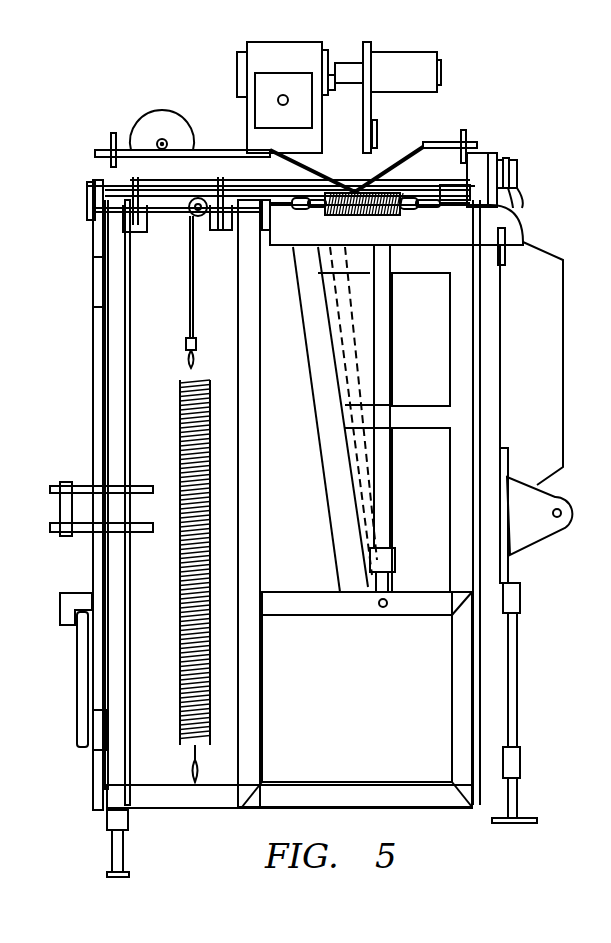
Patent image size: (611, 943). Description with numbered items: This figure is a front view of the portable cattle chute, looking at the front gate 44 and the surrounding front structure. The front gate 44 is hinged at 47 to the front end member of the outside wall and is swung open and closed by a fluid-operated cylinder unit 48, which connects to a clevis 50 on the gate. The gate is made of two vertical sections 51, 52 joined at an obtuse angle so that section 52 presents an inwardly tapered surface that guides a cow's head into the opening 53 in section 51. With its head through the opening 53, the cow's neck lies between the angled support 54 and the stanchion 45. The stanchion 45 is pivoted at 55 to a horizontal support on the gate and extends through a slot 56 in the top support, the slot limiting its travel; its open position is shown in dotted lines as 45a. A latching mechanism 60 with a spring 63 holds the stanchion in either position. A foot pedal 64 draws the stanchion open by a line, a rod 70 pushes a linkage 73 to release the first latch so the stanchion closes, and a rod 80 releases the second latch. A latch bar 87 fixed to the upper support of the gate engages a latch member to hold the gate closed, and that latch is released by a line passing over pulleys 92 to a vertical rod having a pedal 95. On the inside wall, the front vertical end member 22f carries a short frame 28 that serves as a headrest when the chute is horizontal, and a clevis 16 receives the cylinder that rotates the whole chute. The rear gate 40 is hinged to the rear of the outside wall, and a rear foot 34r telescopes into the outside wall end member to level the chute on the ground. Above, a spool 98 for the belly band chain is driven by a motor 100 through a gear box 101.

The clevis 16 is at (557, 497).
The front vertical end member 22f is at (497, 718).
The short frame 28 is at (492, 293).
The rear foot 34r is at (110, 852).
The rear gate 40 is at (462, 397).
The front gate 44 is at (440, 678).
The stanchion 45 is at (388, 300).
The stanchion open position 45a is at (330, 372).
The front gate hinge 47 is at (95, 290).
The fluid-operated cylinder unit 48 is at (62, 505).
The clevis on gate 50 is at (120, 488).
The first vertical section 51 is at (268, 235).
The second vertical section 52 is at (175, 304).
The opening 53 is at (432, 389).
The angled support 54 is at (327, 492).
The pivot 55 is at (381, 608).
The slot 56 is at (408, 592).
The latching mechanism 60 is at (375, 143).
The spring 63 is at (380, 212).
The foot pedal 64 is at (80, 683).
The rod 70 is at (468, 135).
The linkage 73 is at (440, 142).
The rod 80 is at (112, 133).
The latch bar 87 is at (201, 149).
The pulleys 92 is at (520, 172).
The pedal 95 is at (538, 823).
The spool 98 is at (153, 116).
The motor 100 is at (438, 52).
The gear box 101 is at (246, 58).